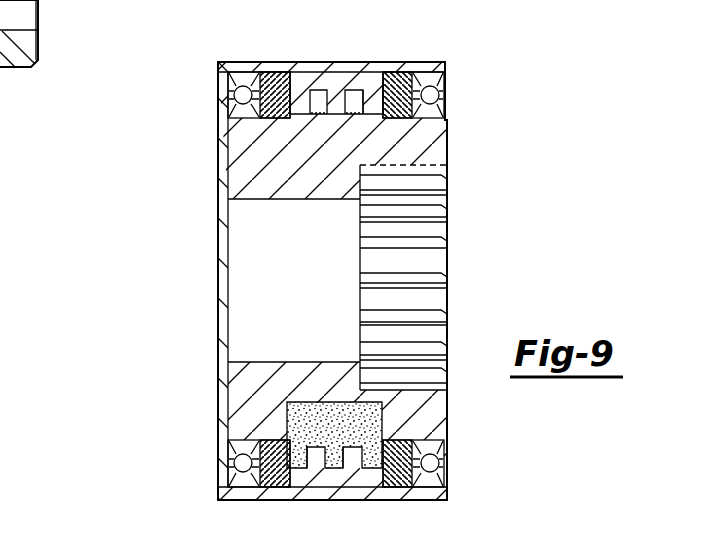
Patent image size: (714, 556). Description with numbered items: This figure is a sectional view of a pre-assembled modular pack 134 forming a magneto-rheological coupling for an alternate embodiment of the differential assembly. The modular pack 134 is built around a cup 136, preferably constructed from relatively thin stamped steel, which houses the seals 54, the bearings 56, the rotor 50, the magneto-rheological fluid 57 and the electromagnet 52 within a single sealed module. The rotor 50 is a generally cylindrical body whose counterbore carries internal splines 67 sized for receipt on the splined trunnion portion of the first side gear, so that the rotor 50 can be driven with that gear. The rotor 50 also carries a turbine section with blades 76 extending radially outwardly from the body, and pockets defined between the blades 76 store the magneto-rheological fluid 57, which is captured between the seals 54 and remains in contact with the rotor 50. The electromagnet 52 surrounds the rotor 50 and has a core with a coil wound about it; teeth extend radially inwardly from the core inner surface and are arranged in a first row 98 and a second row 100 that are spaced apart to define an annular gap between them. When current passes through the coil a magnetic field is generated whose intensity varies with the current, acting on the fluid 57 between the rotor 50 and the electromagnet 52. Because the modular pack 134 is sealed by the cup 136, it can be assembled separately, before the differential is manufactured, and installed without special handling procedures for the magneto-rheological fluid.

The rotor 50 is at (438, 140).
The electromagnet 52 is at (338, 81).
The seals 54 is at (264, 80).
The bearings 56 is at (228, 85).
The magneto-rheological fluid 57 is at (318, 402).
The internal splines 67 is at (432, 247).
The blades 76 is at (375, 100).
The first row 98 is at (353, 455).
The second row 100 is at (316, 455).
The modular pack 134 is at (120, 249).
The cup 136 is at (218, 169).